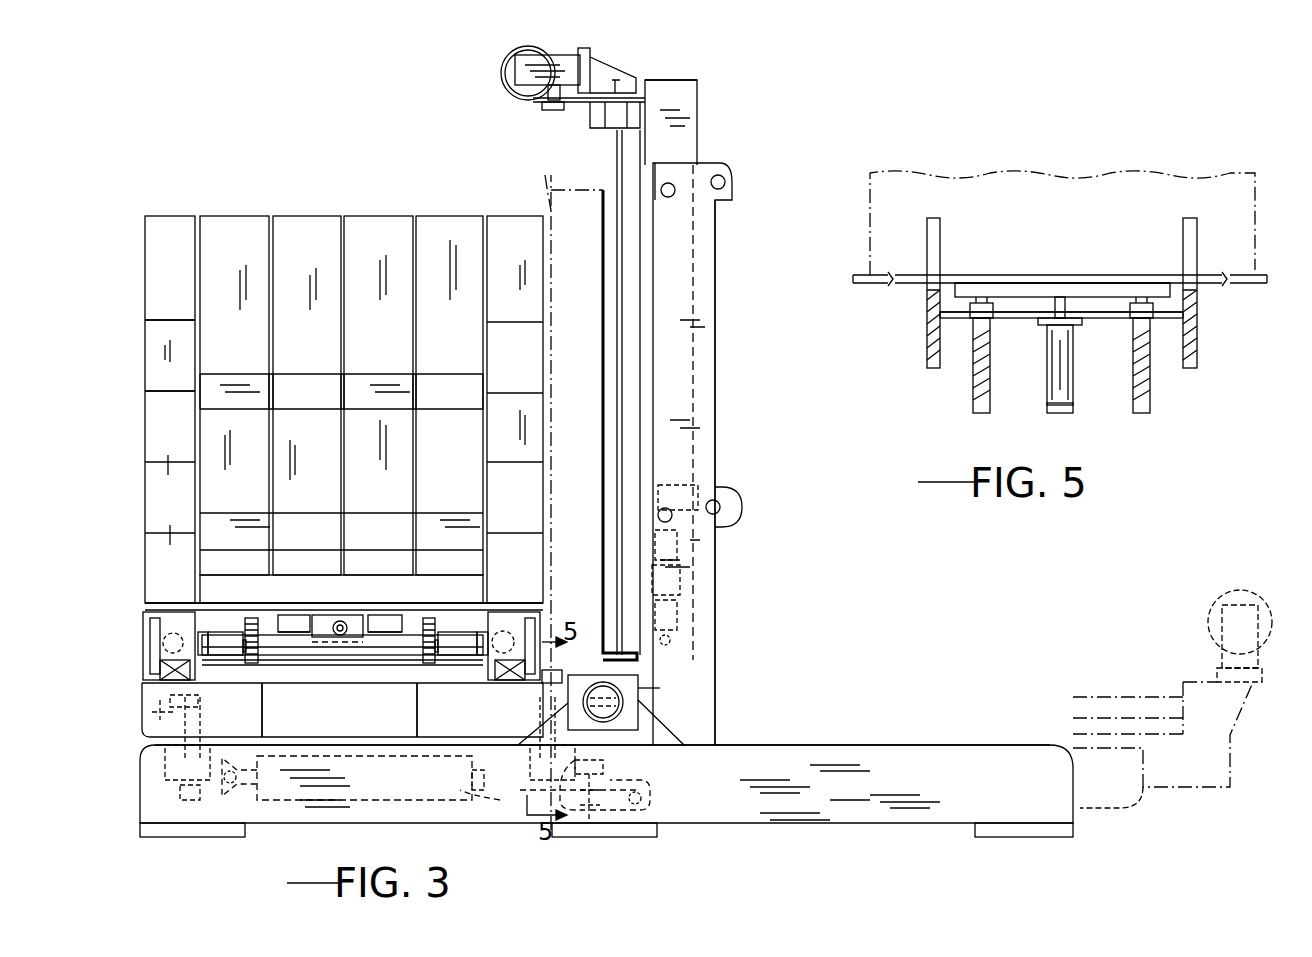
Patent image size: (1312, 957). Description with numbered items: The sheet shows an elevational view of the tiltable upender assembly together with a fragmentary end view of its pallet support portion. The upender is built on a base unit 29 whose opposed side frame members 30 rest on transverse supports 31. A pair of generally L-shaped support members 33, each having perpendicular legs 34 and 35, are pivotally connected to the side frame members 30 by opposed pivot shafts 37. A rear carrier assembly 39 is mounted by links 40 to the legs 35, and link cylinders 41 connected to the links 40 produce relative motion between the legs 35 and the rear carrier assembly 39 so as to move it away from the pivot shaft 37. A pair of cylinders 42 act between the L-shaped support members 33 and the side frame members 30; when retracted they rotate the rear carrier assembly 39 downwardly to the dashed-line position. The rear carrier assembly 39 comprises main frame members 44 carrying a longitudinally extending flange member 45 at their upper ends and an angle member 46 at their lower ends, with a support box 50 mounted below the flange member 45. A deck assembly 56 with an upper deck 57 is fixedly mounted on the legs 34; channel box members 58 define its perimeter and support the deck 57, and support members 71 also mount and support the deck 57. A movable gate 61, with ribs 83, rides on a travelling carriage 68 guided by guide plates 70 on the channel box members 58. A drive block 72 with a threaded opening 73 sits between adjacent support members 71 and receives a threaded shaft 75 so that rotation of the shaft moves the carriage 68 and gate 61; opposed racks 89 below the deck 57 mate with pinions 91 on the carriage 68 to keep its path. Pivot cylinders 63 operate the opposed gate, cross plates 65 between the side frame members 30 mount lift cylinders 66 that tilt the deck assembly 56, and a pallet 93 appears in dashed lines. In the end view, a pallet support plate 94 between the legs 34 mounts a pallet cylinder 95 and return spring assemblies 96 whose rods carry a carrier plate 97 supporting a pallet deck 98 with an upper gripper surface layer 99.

In FIG. 3, the base unit 29 is at (903, 830).
In FIG. 3, the side frame members 30 is at (850, 746).
In FIG. 3, the transverse supports 31 is at (172, 838).
In FIG. 3, the L-shaped support members 33 is at (352, 680).
In FIG. 5, the L-shaped support members 33 is at (916, 328).
In FIG. 3, the legs 34 is at (400, 722).
In FIG. 5, the legs 34 is at (928, 362).
In FIG. 3, the legs 35 is at (717, 375).
In FIG. 3, the pivot shafts 37 is at (610, 705).
In FIG. 3, the rear carrier assembly 39 is at (705, 88).
In FIG. 3, the links 40 is at (705, 160).
In FIG. 3, the link cylinders 41 is at (692, 597).
In FIG. 3, the cylinders 42 is at (333, 800).
In FIG. 3, the main frame members 44 is at (690, 80).
In FIG. 3, the flange member 45 is at (636, 76).
In FIG. 3, the angle member 46 is at (640, 688).
In FIG. 3, the support box 50 is at (590, 112).
In FIG. 3, the deck assembly 56 is at (205, 608).
In FIG. 3, the upper deck 57 is at (155, 605).
In FIG. 3, the channel box members 58 is at (140, 645).
In FIG. 3, the movable gate 61 is at (458, 449).
In FIG. 3, the pivot cylinders 63 is at (140, 618).
In FIG. 3, the cross plates 65 is at (160, 768).
In FIG. 3, the lift cylinders 66 is at (155, 712).
In FIG. 3, the travelling carriage 68 is at (312, 665).
In FIG. 3, the guide plates 70 is at (165, 672).
In FIG. 3, the support members 71 is at (222, 622).
In FIG. 3, the drive block 72 is at (320, 632).
In FIG. 3, the threaded opening 73 is at (360, 630).
In FIG. 3, the threaded shaft 75 is at (340, 636).
In FIG. 3, the ribs 83 is at (162, 388).
In FIG. 3, the racks 89 is at (285, 605).
In FIG. 3, the pinions 91 is at (255, 655).
In FIG. 3, the pallet 93 is at (547, 177).
In FIG. 5, the pallet 93 is at (1258, 250).
In FIG. 5, the pallet support plate 94 is at (1015, 320).
In FIG. 3, the pallet cylinder 95 is at (520, 790).
In FIG. 5, the pallet cylinder 95 is at (1078, 385).
In FIG. 5, the return spring assemblies 96 is at (972, 400).
In FIG. 5, the carrier plate 97 is at (1098, 283).
In FIG. 5, the pallet deck 98 is at (878, 290).
In FIG. 5, the upper gripper surface layer 99 is at (968, 275).